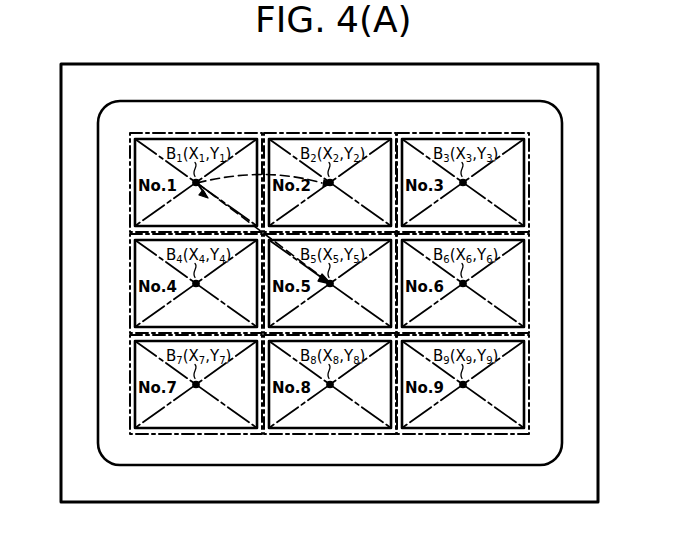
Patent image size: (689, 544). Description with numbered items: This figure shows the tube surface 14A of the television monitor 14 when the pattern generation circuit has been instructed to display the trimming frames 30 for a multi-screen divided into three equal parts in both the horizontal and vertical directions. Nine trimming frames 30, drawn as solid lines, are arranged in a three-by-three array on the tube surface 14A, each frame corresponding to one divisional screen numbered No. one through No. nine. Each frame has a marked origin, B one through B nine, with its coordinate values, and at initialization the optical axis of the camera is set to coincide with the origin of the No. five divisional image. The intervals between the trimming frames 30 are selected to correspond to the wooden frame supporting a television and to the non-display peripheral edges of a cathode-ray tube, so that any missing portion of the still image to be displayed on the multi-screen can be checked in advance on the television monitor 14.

The television monitor 14 is at (584, 64).
The tube surface 14A is at (563, 139).
The trimming frames 30 is at (130, 355).